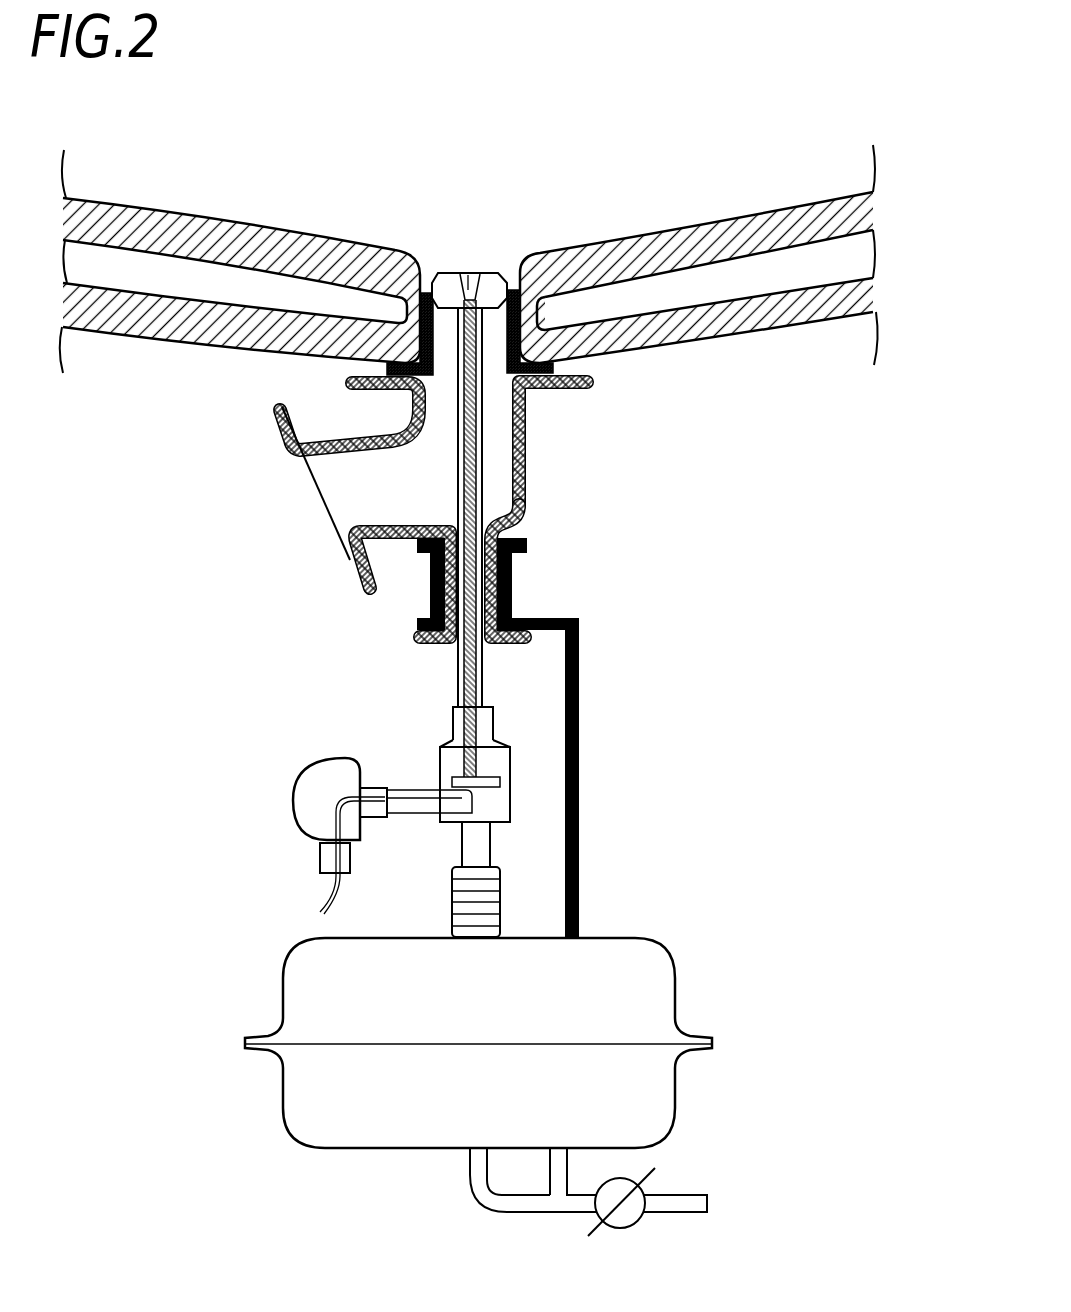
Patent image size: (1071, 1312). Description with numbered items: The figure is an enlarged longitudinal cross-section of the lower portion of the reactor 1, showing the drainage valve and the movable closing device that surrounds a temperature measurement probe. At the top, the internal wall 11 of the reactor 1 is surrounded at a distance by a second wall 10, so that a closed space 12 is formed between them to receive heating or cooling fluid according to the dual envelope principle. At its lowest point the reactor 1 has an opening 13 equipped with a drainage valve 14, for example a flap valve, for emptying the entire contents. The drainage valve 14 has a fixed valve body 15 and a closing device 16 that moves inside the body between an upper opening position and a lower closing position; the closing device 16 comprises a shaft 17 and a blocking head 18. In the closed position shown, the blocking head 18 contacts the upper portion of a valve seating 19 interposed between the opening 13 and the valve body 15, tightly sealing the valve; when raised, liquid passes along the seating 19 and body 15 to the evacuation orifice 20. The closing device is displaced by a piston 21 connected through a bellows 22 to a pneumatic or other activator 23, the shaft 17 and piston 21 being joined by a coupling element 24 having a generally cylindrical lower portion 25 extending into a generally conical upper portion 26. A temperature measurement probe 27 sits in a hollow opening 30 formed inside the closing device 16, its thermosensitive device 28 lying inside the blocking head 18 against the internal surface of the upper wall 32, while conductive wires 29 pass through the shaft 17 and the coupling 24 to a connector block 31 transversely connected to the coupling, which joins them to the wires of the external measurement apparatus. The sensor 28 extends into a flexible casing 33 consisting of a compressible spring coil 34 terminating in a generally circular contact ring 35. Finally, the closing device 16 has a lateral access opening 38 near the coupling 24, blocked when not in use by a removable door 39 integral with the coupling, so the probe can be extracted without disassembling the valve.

The reactor 1 is at (731, 211).
The second wall 10 is at (873, 279).
The internal wall 11 is at (872, 196).
The closed space 12 is at (825, 270).
The opening 13 is at (490, 351).
The drainage valve 14 is at (577, 509).
The valve body 15 is at (514, 423).
The closing device 16 is at (432, 425).
The shaft 17 is at (498, 486).
The blocking head 18 is at (483, 255).
The valve seating 19 is at (510, 287).
The evacuation orifice 20 is at (290, 506).
The piston 21 is at (480, 850).
The bellows 22 is at (497, 897).
The activator 23 is at (706, 998).
The coupling element 24 is at (525, 762).
The lower portion 25 is at (510, 800).
The upper portion 26 is at (580, 693).
The temperature measurement probe 27 is at (483, 507).
The thermosensitive device 28 is at (470, 270).
The conductive wires 29 is at (317, 903).
The hollow opening 30 is at (362, 533).
The connector block 31 is at (286, 783).
The upper wall 32 is at (443, 268).
The flexible casing 33 is at (468, 680).
The compressible spring coil 34 is at (513, 580).
The contact ring 35 is at (503, 740).
The opening 38 is at (430, 763).
The door 39 is at (447, 747).